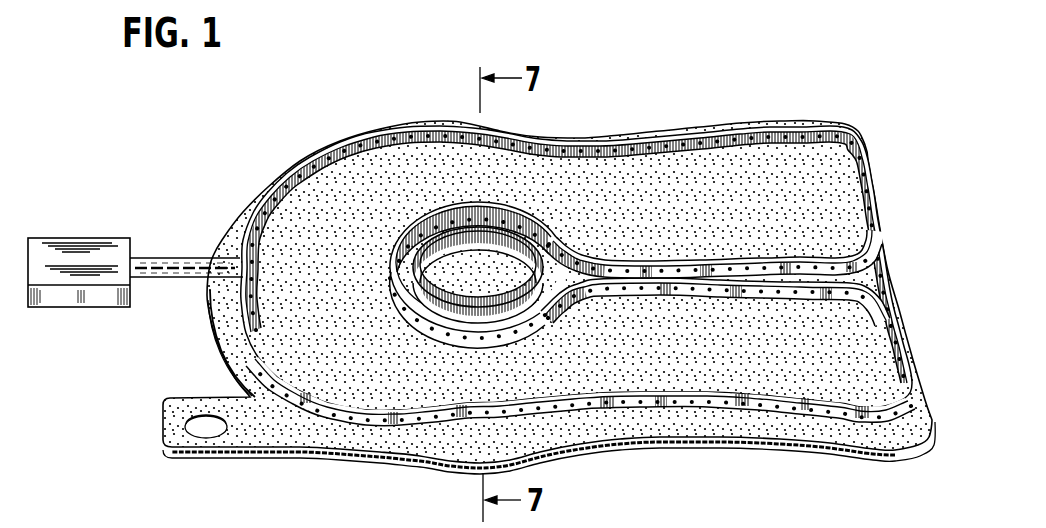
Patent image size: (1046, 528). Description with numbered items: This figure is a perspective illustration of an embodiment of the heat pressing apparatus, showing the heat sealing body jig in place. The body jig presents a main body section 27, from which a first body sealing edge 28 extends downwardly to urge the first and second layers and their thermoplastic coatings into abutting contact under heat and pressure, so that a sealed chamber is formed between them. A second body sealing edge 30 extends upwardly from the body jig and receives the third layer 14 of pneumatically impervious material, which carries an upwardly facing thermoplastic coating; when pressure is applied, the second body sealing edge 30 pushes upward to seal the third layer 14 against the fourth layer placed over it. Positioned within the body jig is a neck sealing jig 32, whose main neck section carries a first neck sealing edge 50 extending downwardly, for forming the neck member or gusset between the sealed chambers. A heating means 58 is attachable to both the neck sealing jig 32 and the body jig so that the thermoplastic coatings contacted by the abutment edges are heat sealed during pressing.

The third layer 14 is at (265, 431).
The main body section 27 is at (695, 407).
The first body sealing edge 28 is at (387, 403).
The second body sealing edge 30 is at (583, 417).
The neck sealing jig 32 is at (500, 234).
The first neck sealing edge 50 is at (534, 240).
The heating means 58 is at (95, 247).